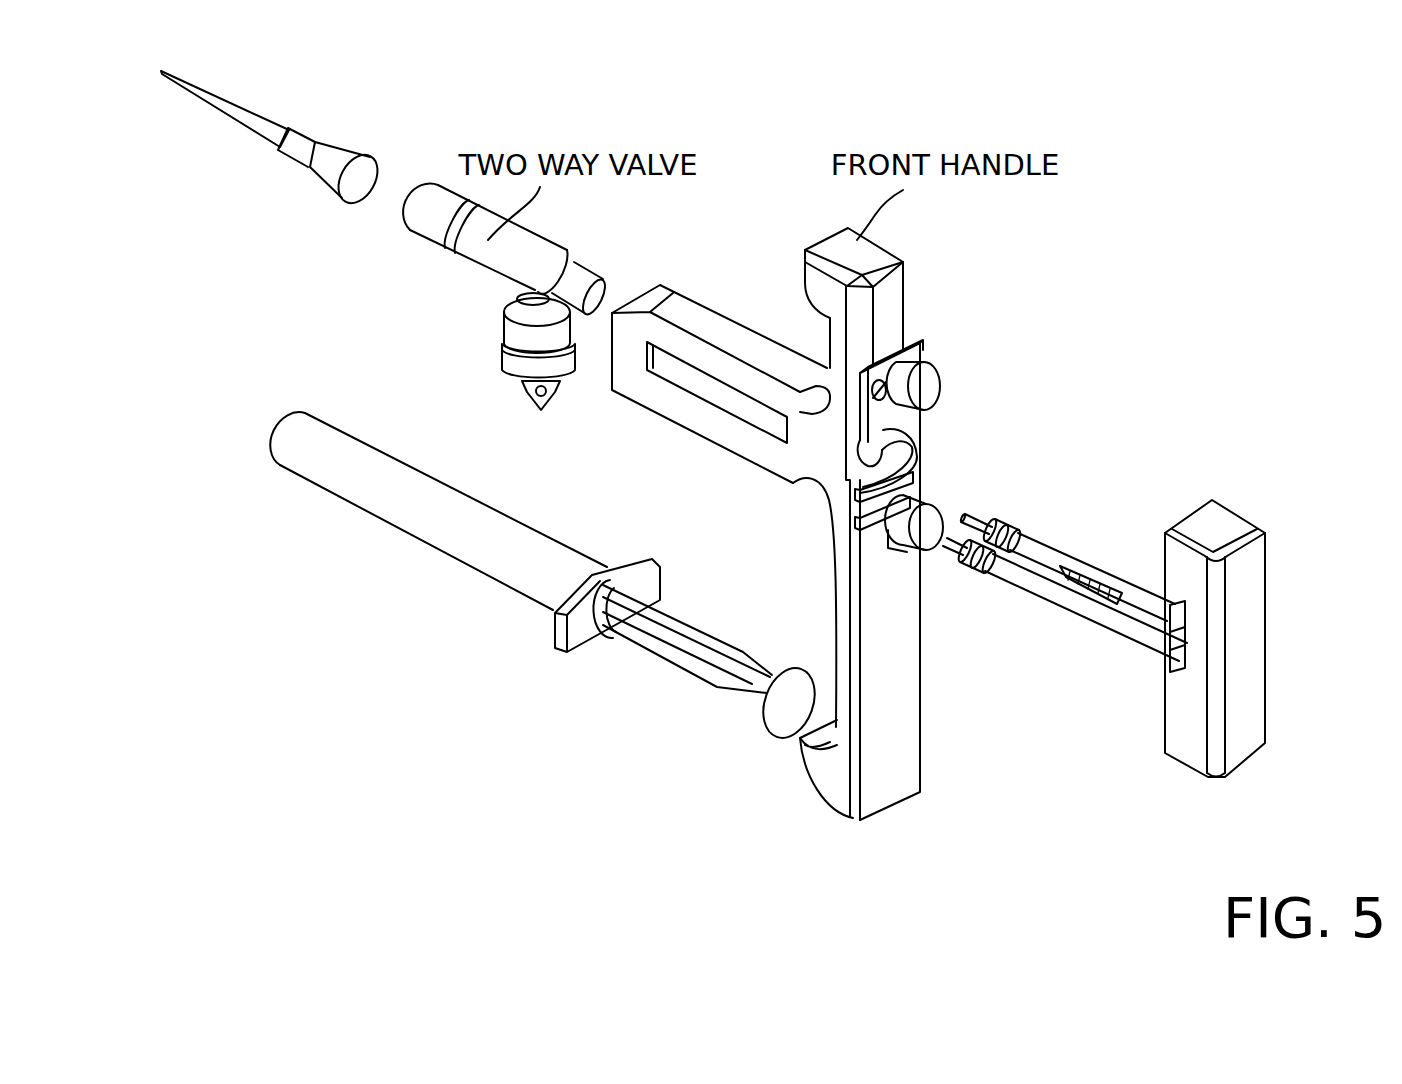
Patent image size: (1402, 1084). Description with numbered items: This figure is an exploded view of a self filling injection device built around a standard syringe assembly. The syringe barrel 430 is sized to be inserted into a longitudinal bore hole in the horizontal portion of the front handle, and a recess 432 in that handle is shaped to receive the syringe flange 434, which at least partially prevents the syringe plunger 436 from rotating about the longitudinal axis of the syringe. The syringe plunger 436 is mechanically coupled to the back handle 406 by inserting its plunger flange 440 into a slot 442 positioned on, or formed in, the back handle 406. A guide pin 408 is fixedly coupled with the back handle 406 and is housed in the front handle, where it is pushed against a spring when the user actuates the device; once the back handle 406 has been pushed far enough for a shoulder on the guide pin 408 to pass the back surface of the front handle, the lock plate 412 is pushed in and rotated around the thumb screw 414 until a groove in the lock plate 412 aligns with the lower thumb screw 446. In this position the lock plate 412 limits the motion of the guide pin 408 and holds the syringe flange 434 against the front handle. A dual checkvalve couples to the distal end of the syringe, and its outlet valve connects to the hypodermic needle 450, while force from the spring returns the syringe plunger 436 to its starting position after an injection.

The hypodermic needle 450 is at (307, 170).
The syringe barrel 430 is at (348, 508).
The syringe flange 434 is at (553, 627).
The syringe plunger 436 is at (650, 657).
The plunger flange 440 is at (780, 737).
The recess 432 is at (793, 483).
The thumb screw 414 is at (929, 360).
The lock plate 412 is at (925, 432).
The lower thumb screw 446 is at (930, 497).
The guide pin 408 is at (1058, 603).
The slot 442 is at (1177, 670).
The back handle 406 is at (1250, 643).